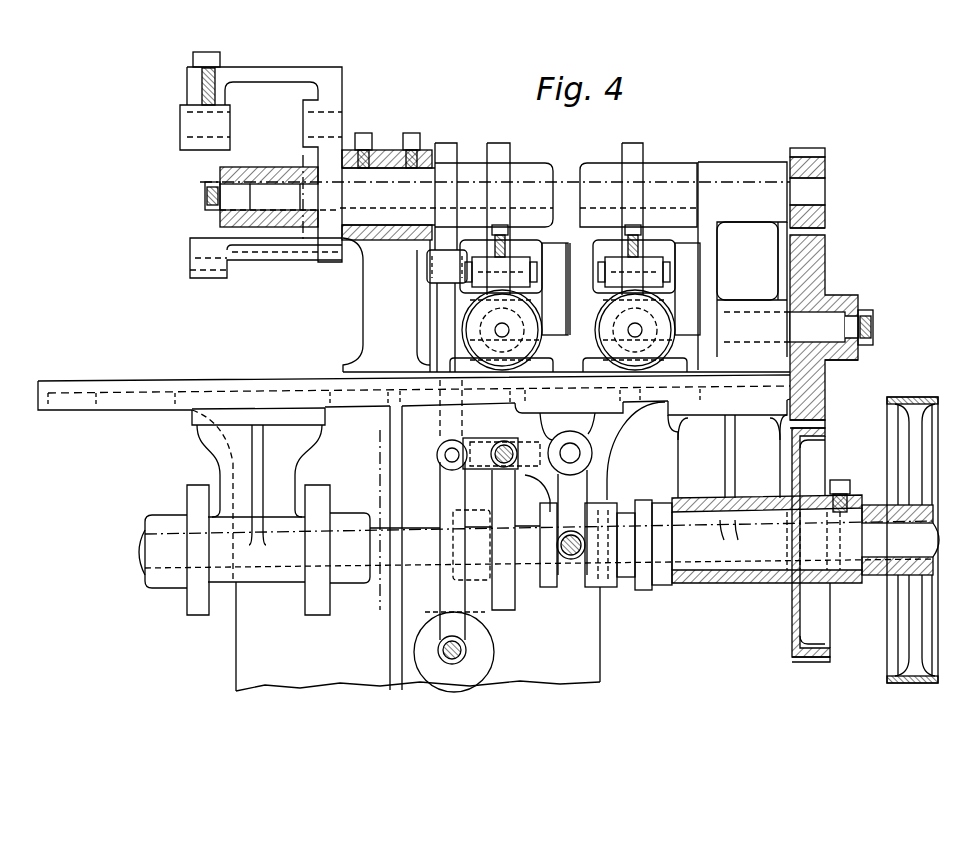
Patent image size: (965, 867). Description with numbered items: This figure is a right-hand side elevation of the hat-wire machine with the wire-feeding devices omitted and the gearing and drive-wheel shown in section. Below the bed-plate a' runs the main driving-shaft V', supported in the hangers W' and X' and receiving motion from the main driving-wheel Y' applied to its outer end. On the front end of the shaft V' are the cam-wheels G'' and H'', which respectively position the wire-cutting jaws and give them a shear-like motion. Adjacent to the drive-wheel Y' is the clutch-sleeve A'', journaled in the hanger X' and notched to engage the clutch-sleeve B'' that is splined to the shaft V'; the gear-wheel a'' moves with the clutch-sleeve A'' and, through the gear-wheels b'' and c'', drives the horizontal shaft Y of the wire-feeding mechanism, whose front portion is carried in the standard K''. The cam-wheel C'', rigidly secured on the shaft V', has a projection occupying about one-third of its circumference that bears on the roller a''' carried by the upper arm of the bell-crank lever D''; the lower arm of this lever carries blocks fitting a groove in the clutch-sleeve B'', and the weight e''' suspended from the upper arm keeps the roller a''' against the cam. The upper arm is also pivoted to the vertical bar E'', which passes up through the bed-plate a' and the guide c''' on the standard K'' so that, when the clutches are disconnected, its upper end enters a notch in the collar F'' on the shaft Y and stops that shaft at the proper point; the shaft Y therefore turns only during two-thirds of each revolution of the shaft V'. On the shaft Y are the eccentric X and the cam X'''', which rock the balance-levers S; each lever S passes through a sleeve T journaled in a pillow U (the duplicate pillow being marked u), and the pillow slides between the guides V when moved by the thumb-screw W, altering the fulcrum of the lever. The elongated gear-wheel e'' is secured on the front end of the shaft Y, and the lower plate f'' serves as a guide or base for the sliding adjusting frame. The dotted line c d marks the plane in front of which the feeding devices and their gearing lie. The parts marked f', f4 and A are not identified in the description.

The bracket f' is at (261, 157).
The lower plate f'' is at (266, 260).
The bracket foot f4 is at (201, 277).
The horizontal shaft Y is at (317, 197).
The elongated gear-wheel e'' is at (207, 183).
The dotted section line c is at (301, 187).
The dotted section line d is at (300, 238).
The gear-wheel a'' is at (565, 186).
The collar F'' is at (448, 196).
The guide c''' is at (432, 266).
The vertical bar E'' is at (449, 361).
The eccentric X is at (498, 219).
The cam X'''' is at (644, 219).
The standard K'' is at (566, 305).
The sleeve T is at (580, 287).
The balance-lever S is at (567, 257).
The thumb-screw W is at (568, 330).
The pillow u is at (572, 318).
The pillow U is at (683, 307).
The guides V is at (568, 353).
The gear-wheel c'' is at (785, 405).
The gear-wheel b'' is at (841, 374).
The bed-plate a' is at (414, 392).
The frame A is at (418, 548).
The hanger W' is at (258, 495).
The main driving-shaft V' is at (540, 549).
The cam-wheel G'' is at (174, 550).
The cam-wheel H'' is at (337, 550).
The weight e''' is at (456, 566).
The roller a''' is at (501, 441).
The cam-wheel C'' is at (521, 540).
The bell-crank lever D'' is at (590, 488).
The clutch-sleeve B'' is at (596, 545).
The hanger X' is at (727, 449).
The clutch-sleeve A'' is at (757, 540).
The main driving-wheel Y' is at (912, 540).